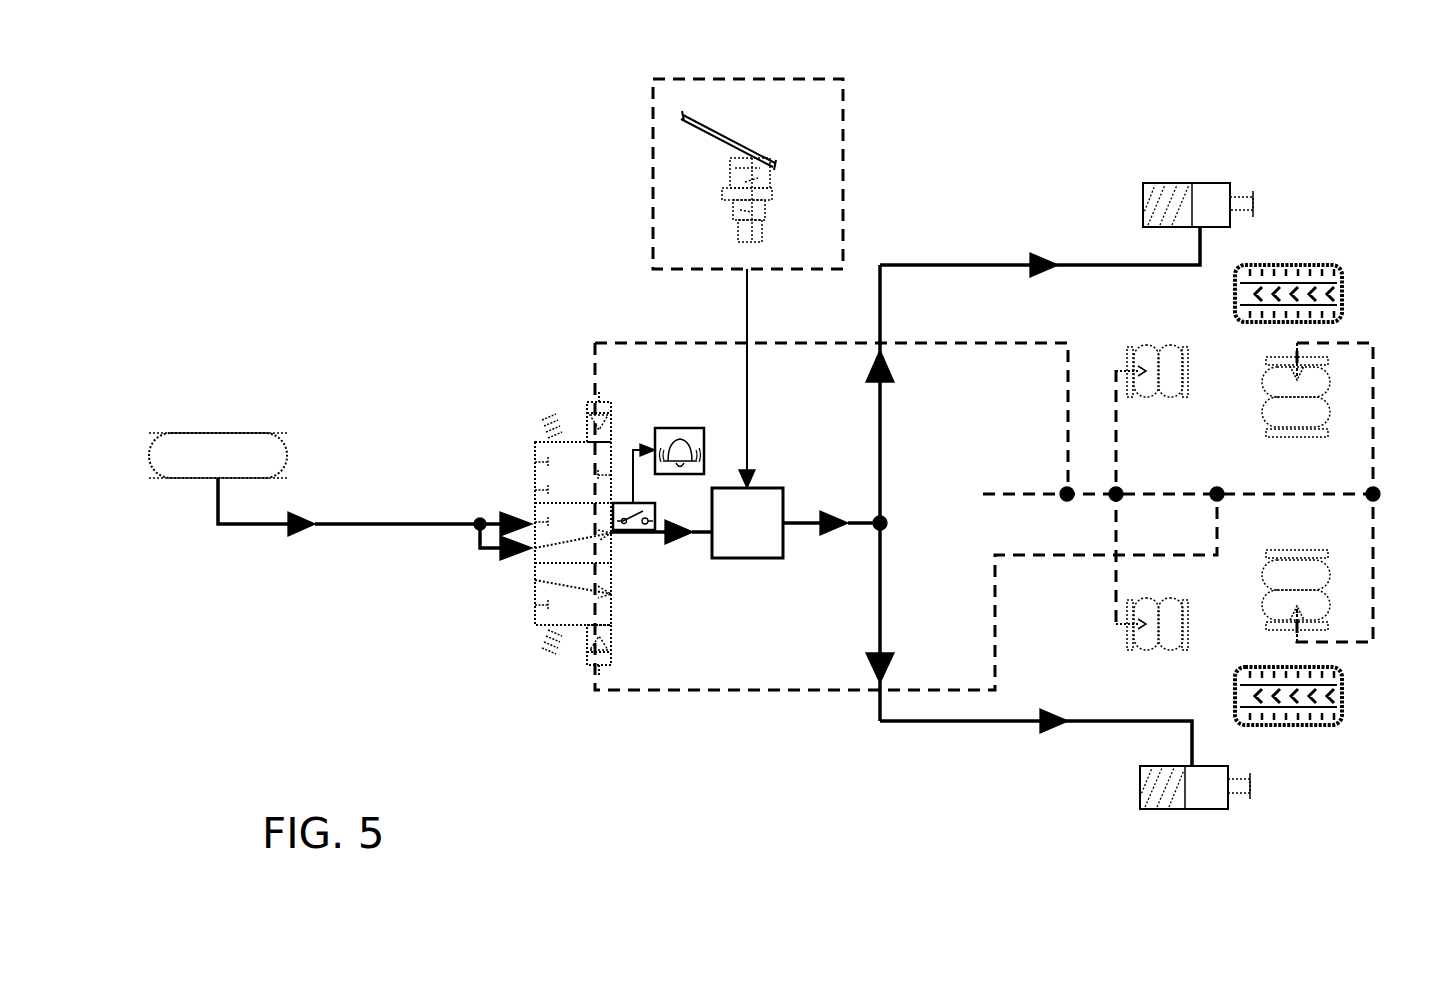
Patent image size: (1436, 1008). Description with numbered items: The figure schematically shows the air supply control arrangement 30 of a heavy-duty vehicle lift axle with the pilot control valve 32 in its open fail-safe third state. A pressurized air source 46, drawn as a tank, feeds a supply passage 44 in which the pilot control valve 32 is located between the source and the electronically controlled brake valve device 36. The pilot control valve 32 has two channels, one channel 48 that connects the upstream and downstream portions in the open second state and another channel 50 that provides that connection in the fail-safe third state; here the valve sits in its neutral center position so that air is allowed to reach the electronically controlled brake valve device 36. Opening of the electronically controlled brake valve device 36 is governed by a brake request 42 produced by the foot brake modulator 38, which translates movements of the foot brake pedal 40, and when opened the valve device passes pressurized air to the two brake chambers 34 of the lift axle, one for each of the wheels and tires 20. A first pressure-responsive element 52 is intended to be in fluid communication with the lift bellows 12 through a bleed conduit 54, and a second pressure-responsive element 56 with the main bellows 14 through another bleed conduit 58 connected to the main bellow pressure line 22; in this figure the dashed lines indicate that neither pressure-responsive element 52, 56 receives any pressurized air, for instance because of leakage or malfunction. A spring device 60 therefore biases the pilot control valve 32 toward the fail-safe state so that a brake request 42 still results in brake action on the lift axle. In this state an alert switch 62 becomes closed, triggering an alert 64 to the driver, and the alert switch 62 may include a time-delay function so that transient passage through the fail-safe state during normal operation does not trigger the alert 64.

The air supply control arrangement 30 is at (383, 215).
The pressurized air source 46 is at (215, 432).
The supply passage 44 is at (390, 524).
The pilot control valve 32 is at (544, 569).
The channel 50 is at (583, 540).
The channel 48 is at (573, 588).
The first pressure-responsive element 52 is at (587, 413).
The second pressure-responsive element 56 is at (585, 660).
The spring device 60 is at (548, 420).
The alert switch 62 is at (620, 502).
The alert 64 is at (688, 428).
The electronically controlled brake valve device 36 is at (749, 523).
The foot brake pedal 40 is at (727, 136).
The foot brake modulator 38 is at (768, 230).
The brake request 42 is at (747, 297).
The bleed conduit 54 is at (963, 347).
The bleed conduit 58 is at (820, 690).
The brake chamber 34 is at (1195, 183).
The wheels and tires 20 is at (1300, 265).
The lift bellows 12 is at (1170, 345).
The main bellows 14 is at (1262, 408).
The main bellow pressure line 22 is at (1312, 494).